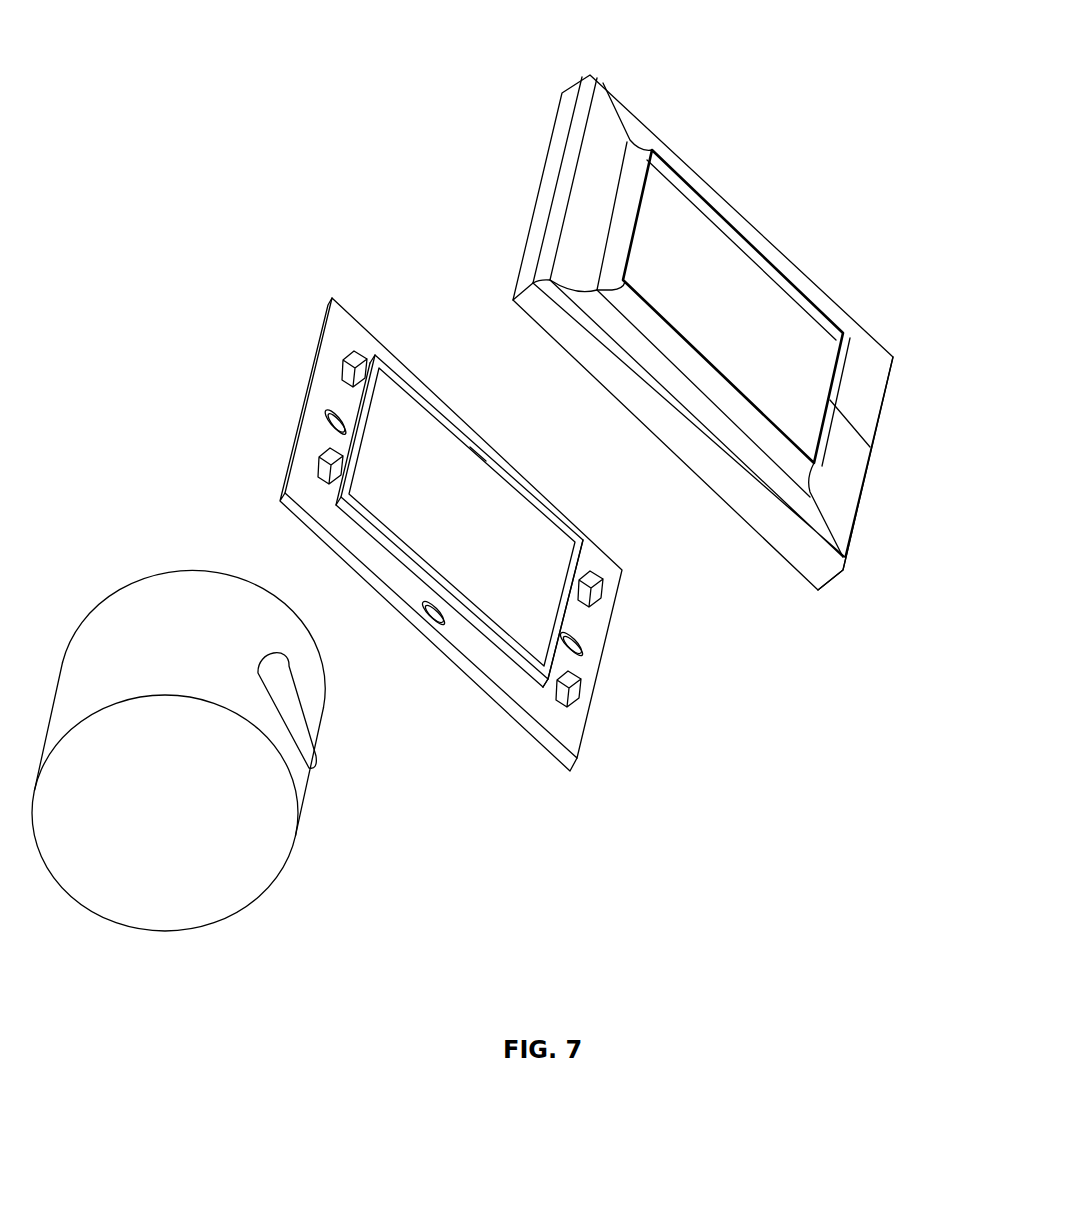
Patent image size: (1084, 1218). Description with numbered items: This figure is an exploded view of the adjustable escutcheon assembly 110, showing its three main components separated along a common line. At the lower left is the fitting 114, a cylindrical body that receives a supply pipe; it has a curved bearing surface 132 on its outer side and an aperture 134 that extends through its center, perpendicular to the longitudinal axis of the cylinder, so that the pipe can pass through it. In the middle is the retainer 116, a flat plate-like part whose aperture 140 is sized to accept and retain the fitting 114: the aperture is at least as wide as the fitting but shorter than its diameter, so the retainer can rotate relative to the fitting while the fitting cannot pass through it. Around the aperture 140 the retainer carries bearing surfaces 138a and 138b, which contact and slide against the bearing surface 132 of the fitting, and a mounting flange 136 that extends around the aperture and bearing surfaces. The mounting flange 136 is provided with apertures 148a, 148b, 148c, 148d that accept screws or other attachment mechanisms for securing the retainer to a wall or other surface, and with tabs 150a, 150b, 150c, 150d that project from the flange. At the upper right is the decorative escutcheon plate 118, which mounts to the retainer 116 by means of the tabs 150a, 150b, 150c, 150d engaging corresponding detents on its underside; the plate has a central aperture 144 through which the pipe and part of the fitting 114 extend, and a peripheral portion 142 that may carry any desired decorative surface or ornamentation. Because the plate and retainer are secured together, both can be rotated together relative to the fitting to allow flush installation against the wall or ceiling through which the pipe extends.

The adjustable escutcheon assembly 110 is at (188, 45).
The fitting 114 is at (227, 763).
The retainer 116 is at (460, 501).
The decorative escutcheon plate 118 is at (728, 332).
The curved bearing surface 132 is at (178, 582).
The aperture 134 is at (305, 727).
The mounting flange 136 is at (568, 748).
The bearing surface 138a is at (548, 578).
The bearing surface 138b is at (392, 437).
The aperture 140 is at (480, 546).
The peripheral portion 142 is at (850, 482).
The central aperture 144 is at (748, 330).
The aperture 148a is at (326, 412).
The aperture 148b is at (478, 452).
The aperture 148c is at (584, 648).
The aperture 148d is at (433, 625).
The tab 150a is at (368, 358).
The tab 150b is at (606, 590).
The tab 150c is at (588, 694).
The tab 150d is at (318, 462).